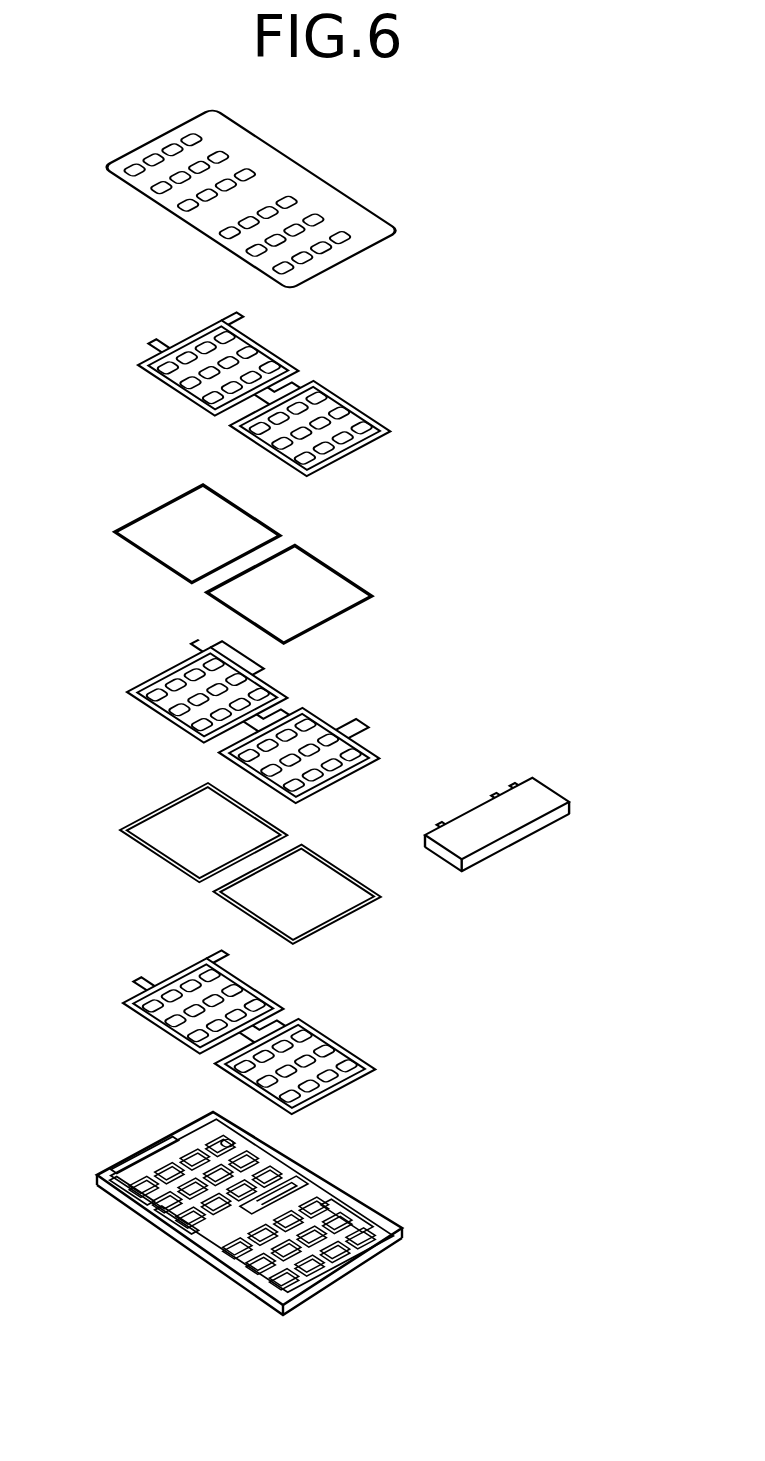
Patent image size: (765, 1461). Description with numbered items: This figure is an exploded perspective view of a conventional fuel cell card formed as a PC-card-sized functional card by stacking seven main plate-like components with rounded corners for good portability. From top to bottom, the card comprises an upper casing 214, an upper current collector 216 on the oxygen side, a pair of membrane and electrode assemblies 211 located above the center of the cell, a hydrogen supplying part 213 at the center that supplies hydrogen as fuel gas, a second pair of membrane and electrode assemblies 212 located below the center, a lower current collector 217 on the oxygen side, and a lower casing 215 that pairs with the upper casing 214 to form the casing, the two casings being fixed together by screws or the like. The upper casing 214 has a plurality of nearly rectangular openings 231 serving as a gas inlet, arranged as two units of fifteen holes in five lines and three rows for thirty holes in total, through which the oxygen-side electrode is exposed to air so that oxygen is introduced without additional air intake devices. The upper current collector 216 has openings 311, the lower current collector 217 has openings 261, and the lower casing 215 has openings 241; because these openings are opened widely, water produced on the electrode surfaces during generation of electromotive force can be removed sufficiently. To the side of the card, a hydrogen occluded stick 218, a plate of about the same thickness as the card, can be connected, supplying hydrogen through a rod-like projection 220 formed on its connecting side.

The upper casing 214 is at (272, 198).
The openings 231 is at (353, 205).
The upper current collector 216 is at (266, 377).
The openings 311 is at (310, 428).
The membrane and electrode assemblies 211 is at (143, 533).
The hydrogen supplying part 213 is at (363, 720).
The membrane and electrode assemblies 212 is at (155, 833).
The hydrogen occluded stick 218 is at (500, 795).
The rod-like projection 220 is at (538, 798).
The lower current collector 217 is at (239, 1028).
The openings 261 is at (295, 1066).
The openings 241 is at (181, 1185).
The lower casing 215 is at (232, 1220).